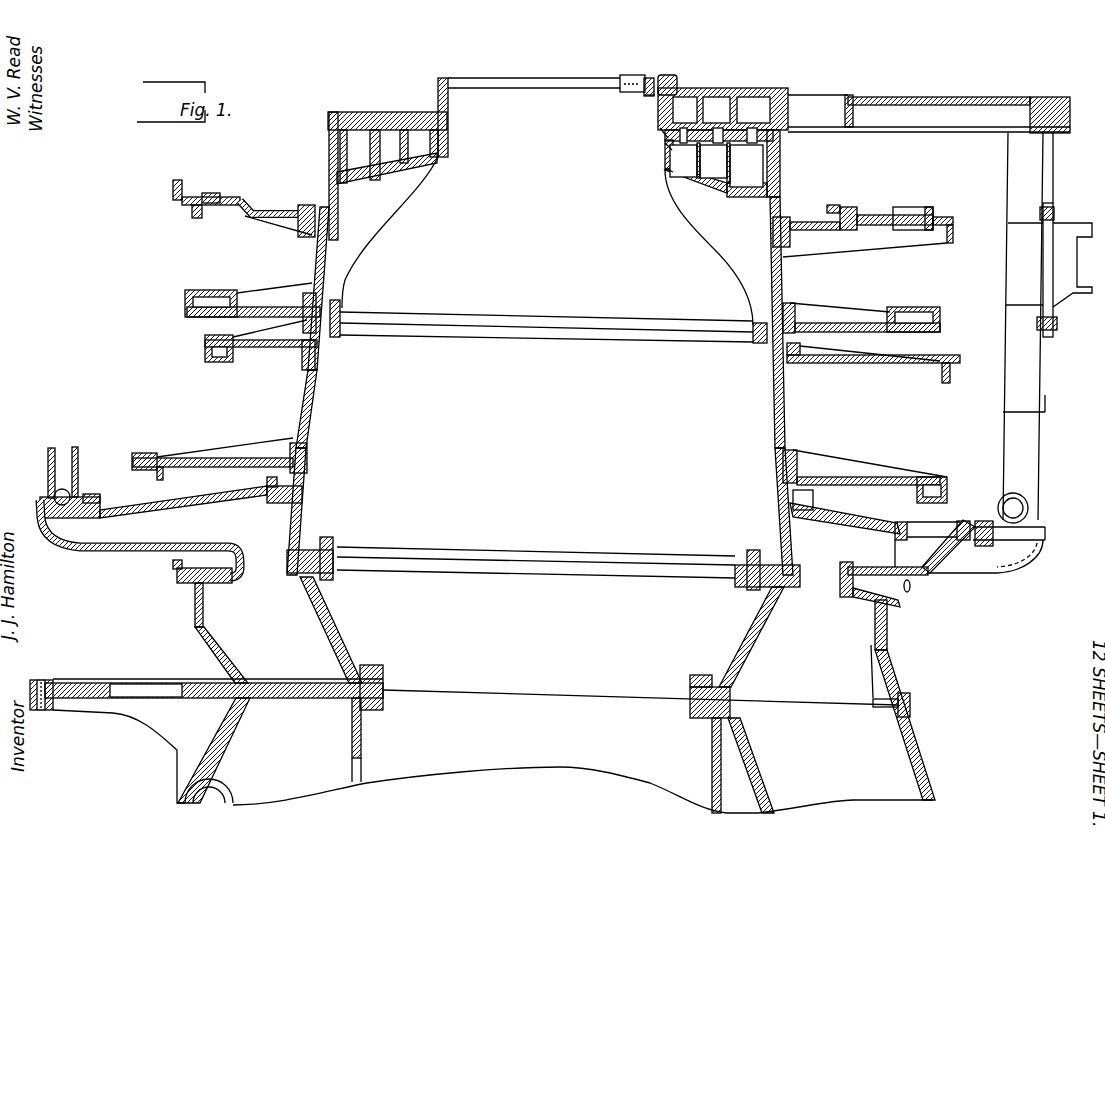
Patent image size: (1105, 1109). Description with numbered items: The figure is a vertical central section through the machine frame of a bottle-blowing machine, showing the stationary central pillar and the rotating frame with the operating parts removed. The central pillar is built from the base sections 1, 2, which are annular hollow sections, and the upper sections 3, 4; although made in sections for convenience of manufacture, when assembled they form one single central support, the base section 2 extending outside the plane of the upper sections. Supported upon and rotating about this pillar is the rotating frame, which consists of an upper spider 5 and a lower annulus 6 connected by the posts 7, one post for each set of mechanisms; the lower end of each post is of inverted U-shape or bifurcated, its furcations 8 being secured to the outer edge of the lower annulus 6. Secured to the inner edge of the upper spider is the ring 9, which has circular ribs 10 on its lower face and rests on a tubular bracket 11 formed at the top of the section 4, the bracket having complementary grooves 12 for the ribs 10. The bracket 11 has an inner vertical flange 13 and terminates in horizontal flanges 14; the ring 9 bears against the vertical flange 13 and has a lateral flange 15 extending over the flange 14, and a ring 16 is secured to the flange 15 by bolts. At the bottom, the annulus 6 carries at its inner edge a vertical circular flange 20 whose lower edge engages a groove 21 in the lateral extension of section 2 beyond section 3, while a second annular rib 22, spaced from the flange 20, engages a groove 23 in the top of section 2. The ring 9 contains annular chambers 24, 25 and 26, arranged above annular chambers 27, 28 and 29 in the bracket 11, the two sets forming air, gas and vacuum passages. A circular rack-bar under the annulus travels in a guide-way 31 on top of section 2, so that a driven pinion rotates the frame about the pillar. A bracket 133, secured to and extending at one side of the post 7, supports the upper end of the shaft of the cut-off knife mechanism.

The base section 1 is at (711, 752).
The base section 2 is at (738, 641).
The upper section 3 is at (771, 440).
The upper section 4 is at (768, 249).
The upper spider 5 is at (938, 97).
The lower annulus 6 is at (855, 527).
The post 7 is at (1037, 186).
The furcations 8 is at (1032, 465).
The ring 9 is at (723, 128).
The circular ribs 10 is at (665, 135).
The tubular bracket 11 is at (670, 170).
The grooves 12 is at (667, 148).
The inner vertical flange 13 is at (660, 103).
The horizontal flange 14 is at (655, 77).
The lateral flange 15 is at (672, 76).
The ring 16 is at (645, 95).
The vertical circular flange 20 is at (310, 516).
The groove 21 is at (294, 574).
The annular rib 22 is at (912, 592).
The groove 23 is at (843, 597).
The annular chamber 24 is at (685, 110).
The annular chamber 25 is at (716, 110).
The annular chamber 26 is at (753, 110).
The annular chamber 27 is at (683, 162).
The annular chamber 28 is at (713, 162).
The annular chamber 29 is at (745, 165).
The guide-way 31 is at (222, 586).
The bracket 133 is at (1072, 312).